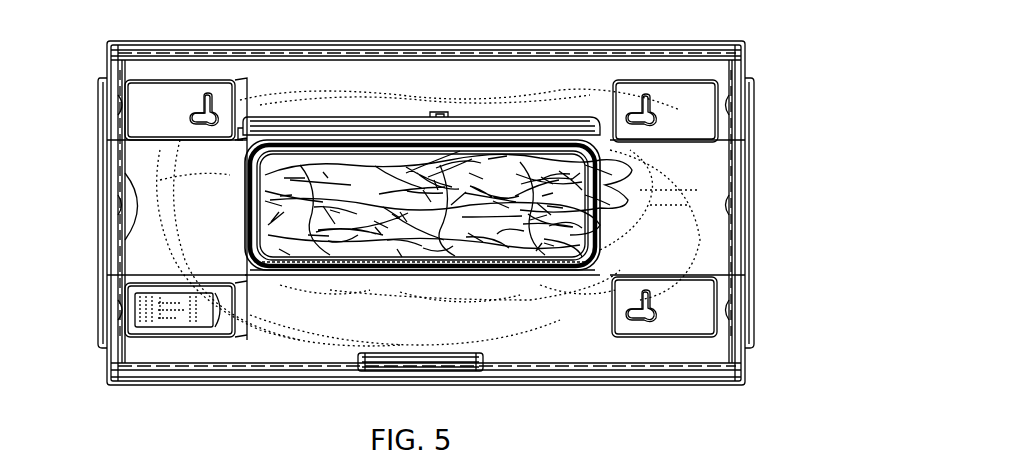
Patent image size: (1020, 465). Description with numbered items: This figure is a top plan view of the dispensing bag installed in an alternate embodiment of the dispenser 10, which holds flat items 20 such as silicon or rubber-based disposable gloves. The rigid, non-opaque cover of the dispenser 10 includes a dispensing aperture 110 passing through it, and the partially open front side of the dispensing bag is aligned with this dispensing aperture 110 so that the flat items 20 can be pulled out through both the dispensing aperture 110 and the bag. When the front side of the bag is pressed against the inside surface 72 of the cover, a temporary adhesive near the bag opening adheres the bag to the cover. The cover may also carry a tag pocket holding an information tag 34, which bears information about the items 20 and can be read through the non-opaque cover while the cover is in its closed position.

The dispenser 10 is at (803, 106).
The flat items 20 is at (570, 143).
The information tag 34 is at (150, 305).
The inside surface of the cover 72 is at (367, 108).
The dispensing aperture 110 is at (497, 157).